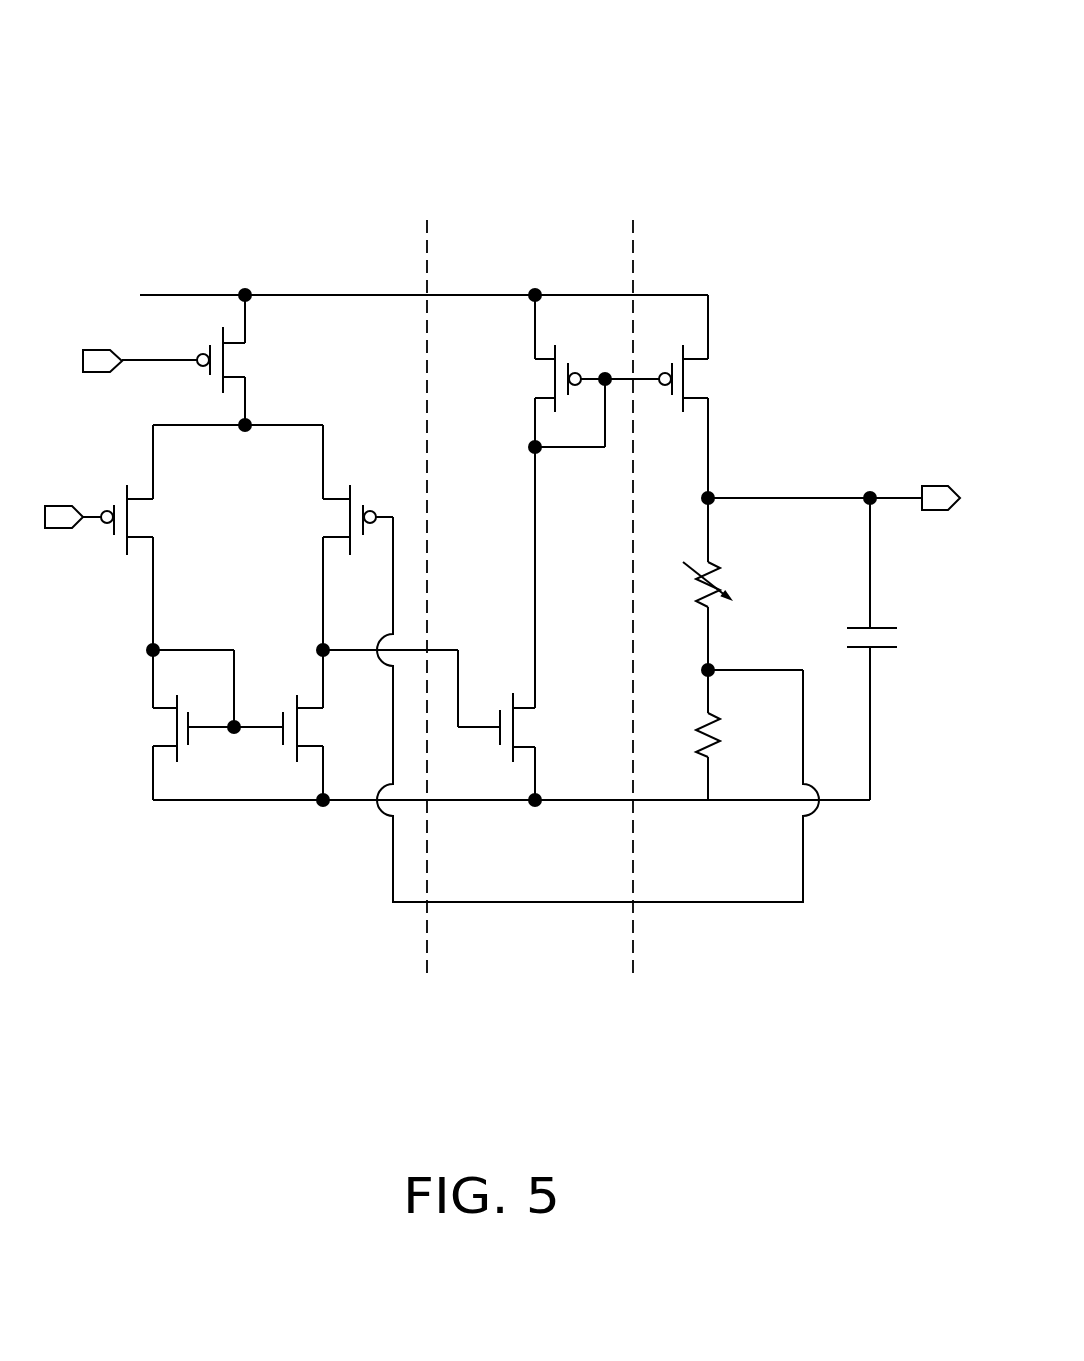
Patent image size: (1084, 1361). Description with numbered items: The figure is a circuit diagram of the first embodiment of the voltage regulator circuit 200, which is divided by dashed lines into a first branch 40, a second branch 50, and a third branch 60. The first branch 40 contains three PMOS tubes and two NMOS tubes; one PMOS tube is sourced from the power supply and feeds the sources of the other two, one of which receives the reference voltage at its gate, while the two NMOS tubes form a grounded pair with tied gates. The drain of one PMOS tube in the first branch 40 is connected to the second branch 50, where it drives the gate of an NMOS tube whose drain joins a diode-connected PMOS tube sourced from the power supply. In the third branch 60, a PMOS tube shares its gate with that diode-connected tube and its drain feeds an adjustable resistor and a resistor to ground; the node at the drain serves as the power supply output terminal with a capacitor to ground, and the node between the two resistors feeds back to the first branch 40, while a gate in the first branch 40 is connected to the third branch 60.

The voltage regulator circuit 200 is at (405, 70).
The first branch 40 is at (287, 188).
The second branch 50 is at (519, 188).
The third branch 60 is at (762, 188).